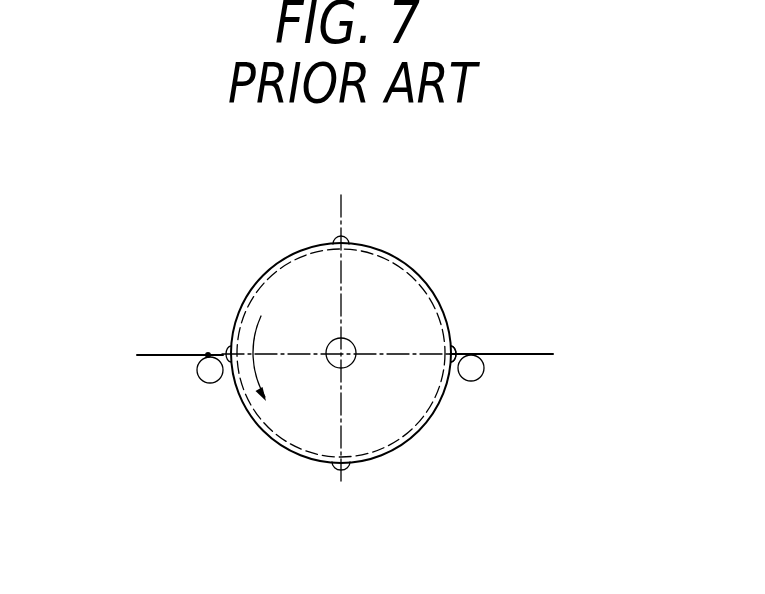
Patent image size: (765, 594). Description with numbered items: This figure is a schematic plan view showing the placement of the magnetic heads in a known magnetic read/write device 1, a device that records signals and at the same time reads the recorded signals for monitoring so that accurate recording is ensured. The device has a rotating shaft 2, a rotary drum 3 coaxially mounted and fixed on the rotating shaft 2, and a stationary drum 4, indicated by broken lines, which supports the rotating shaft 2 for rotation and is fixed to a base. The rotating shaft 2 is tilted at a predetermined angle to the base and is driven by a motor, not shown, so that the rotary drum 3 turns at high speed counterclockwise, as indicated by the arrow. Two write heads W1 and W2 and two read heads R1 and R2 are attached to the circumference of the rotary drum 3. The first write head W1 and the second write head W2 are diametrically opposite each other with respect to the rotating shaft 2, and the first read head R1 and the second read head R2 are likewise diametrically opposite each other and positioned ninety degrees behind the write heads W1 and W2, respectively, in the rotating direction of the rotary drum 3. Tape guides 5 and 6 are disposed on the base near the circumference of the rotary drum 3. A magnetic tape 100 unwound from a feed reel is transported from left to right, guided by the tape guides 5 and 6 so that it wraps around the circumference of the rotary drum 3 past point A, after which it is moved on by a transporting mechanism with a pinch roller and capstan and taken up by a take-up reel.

The magnetic read/write device 1 is at (437, 290).
The rotating shaft 2 is at (330, 339).
The rotary drum 3 is at (447, 342).
The stationary drum 4 is at (383, 256).
The tape guide 5 is at (210, 372).
The tape guide 6 is at (472, 372).
The magnetic tape 100 is at (540, 355).
The first read head R1 is at (333, 238).
The second read head R2 is at (333, 464).
The first write head W1 is at (227, 352).
The second write head W2 is at (452, 350).
The point A is at (207, 354).